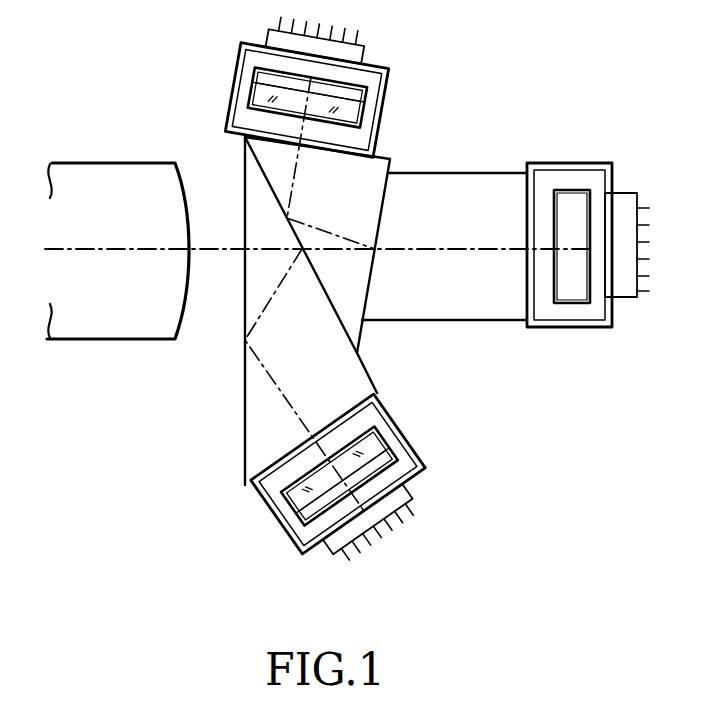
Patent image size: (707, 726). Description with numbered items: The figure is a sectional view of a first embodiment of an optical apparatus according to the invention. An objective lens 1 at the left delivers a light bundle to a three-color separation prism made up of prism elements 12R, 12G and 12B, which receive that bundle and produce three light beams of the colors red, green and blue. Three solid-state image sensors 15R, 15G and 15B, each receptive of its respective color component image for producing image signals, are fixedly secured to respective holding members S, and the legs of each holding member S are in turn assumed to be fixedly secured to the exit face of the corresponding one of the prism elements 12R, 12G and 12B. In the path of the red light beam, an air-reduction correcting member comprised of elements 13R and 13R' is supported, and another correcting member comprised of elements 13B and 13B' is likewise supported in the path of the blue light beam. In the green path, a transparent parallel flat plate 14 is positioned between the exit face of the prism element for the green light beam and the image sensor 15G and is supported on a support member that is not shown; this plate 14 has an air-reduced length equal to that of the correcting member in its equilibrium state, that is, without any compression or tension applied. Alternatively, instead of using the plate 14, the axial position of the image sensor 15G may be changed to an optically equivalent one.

The objective lens 1 is at (98, 333).
The prism element 12R is at (365, 172).
The prism element 12G is at (494, 303).
The prism element 12B is at (253, 427).
The correcting member element 13R is at (346, 97).
The correcting member element 13R' is at (267, 83).
The correcting member element 13B is at (373, 460).
The correcting member element 13B' is at (299, 503).
The transparent parallel flat plate 14 is at (580, 298).
The solid-state image sensor 15R is at (362, 50).
The solid-state image sensor 15G is at (622, 300).
The solid-state image sensor 15B is at (410, 483).
The holding member S is at (233, 115).